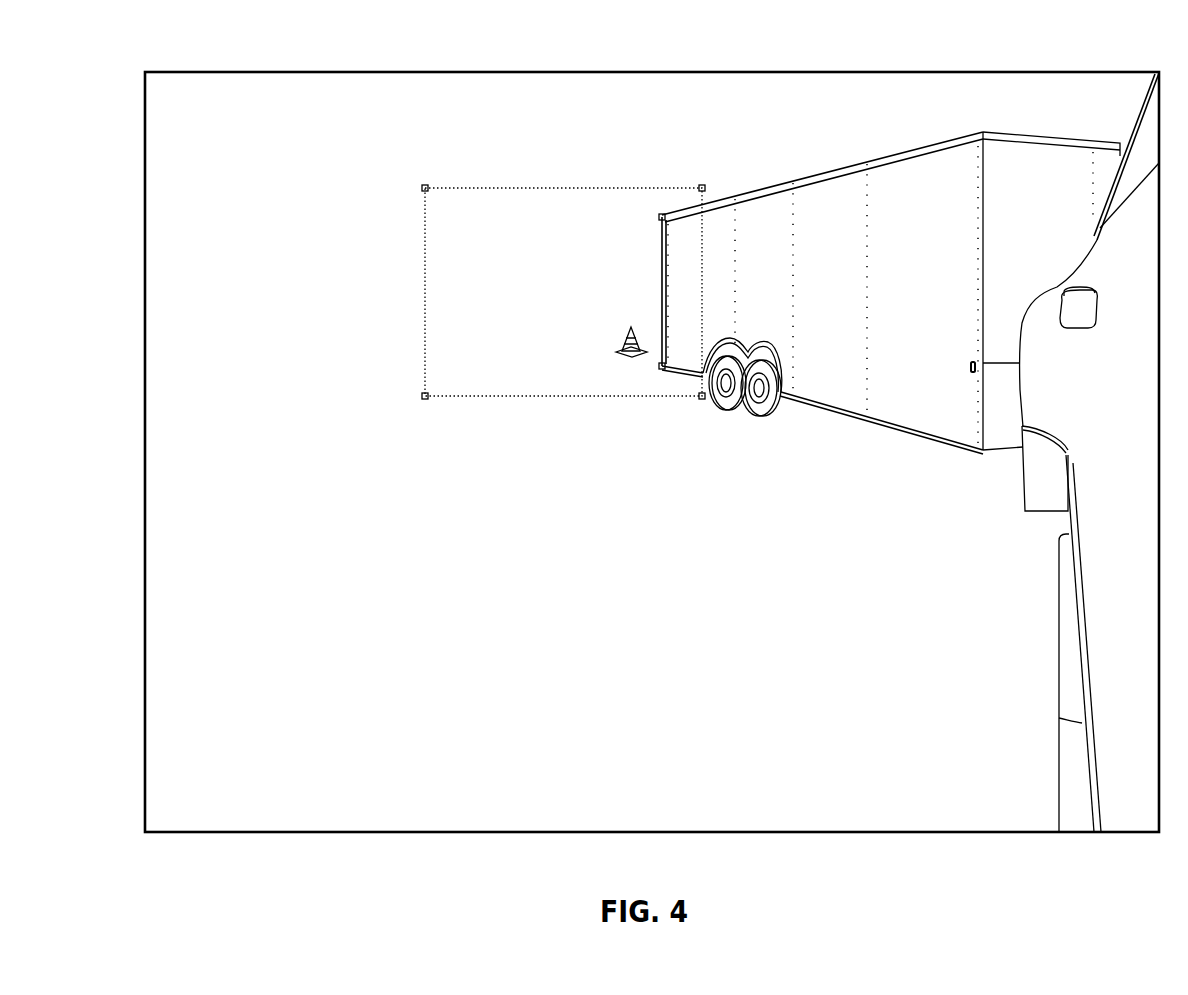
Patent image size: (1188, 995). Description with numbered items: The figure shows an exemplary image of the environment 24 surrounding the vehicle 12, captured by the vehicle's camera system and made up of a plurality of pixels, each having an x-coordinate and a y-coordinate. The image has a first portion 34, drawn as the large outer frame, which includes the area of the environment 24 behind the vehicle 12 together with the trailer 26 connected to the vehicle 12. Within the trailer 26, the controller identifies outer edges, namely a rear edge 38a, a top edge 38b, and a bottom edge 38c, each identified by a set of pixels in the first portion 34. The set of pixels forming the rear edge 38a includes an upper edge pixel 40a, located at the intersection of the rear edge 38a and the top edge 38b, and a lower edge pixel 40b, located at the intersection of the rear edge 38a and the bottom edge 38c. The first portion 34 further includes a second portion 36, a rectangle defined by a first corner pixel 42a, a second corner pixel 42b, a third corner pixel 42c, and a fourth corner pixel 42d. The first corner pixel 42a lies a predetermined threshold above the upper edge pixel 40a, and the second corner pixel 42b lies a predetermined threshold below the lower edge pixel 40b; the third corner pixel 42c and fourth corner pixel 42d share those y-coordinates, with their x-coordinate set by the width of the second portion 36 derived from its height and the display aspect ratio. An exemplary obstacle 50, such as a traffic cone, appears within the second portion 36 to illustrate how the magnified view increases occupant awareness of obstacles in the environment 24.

The vehicle 12 is at (1128, 418).
The environment 24 is at (345, 310).
The trailer 26 is at (815, 297).
The first portion 34 is at (310, 70).
The second portion 36 is at (568, 397).
The rear edge 38a is at (660, 268).
The top edge 38b is at (832, 172).
The bottom edge 38c is at (876, 425).
The upper edge pixel 40a is at (659, 217).
The lower edge pixel 40b is at (659, 368).
The first corner pixel 42a is at (700, 184).
The second corner pixel 42b is at (701, 400).
The third corner pixel 42c is at (425, 184).
The fourth corner pixel 42d is at (425, 400).
The obstacle 50 is at (627, 340).